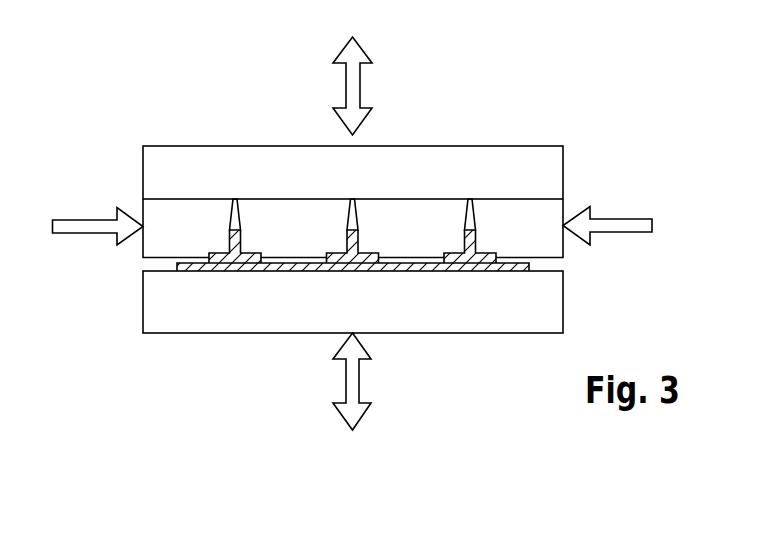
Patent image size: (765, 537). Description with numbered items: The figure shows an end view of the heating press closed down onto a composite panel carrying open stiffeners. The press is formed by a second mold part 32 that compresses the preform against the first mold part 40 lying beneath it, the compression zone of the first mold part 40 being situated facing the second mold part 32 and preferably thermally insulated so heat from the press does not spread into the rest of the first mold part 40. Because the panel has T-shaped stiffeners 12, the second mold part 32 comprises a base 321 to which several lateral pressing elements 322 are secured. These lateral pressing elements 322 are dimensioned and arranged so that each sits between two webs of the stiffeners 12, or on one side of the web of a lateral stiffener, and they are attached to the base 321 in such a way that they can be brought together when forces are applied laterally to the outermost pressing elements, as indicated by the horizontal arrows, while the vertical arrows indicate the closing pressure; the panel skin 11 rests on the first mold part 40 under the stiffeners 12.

The second mold part 32 is at (353, 138).
The base 321 is at (205, 172).
The lateral pressing elements 322 is at (299, 212).
The T-shaped stiffeners 12 is at (206, 241).
The substrate 11 is at (200, 268).
The first mold part 40 is at (457, 305).